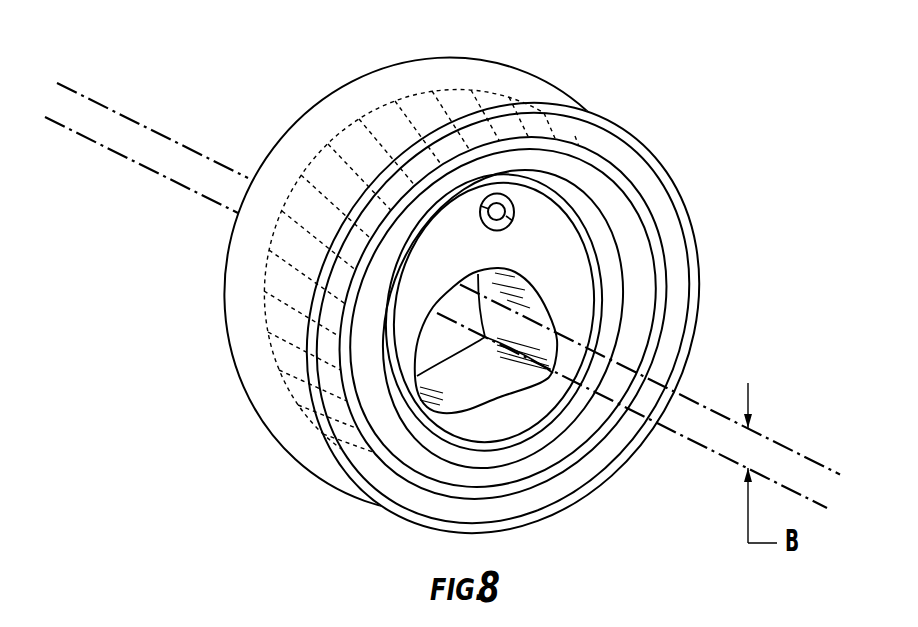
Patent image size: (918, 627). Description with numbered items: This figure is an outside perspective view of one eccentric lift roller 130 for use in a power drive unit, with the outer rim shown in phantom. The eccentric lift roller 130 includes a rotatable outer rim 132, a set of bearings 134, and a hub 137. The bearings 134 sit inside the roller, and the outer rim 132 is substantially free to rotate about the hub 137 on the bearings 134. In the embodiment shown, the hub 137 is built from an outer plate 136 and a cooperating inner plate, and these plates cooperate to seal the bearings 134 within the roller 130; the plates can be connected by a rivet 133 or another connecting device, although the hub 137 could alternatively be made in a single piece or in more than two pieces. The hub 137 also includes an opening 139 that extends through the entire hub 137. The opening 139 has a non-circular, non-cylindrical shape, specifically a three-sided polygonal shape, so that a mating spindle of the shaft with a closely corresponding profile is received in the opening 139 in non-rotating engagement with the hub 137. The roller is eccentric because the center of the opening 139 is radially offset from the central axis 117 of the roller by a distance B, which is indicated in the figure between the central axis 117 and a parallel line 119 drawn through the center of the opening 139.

The central axis 117 is at (112, 110).
The axis line 119 is at (136, 163).
The eccentric lift roller 130 is at (684, 131).
The outer rim 132 is at (693, 344).
The rivet 133 is at (509, 204).
The bearings 134 is at (294, 269).
The outer plate 136 is at (575, 250).
The hub 137 is at (348, 363).
The opening 139 is at (442, 352).